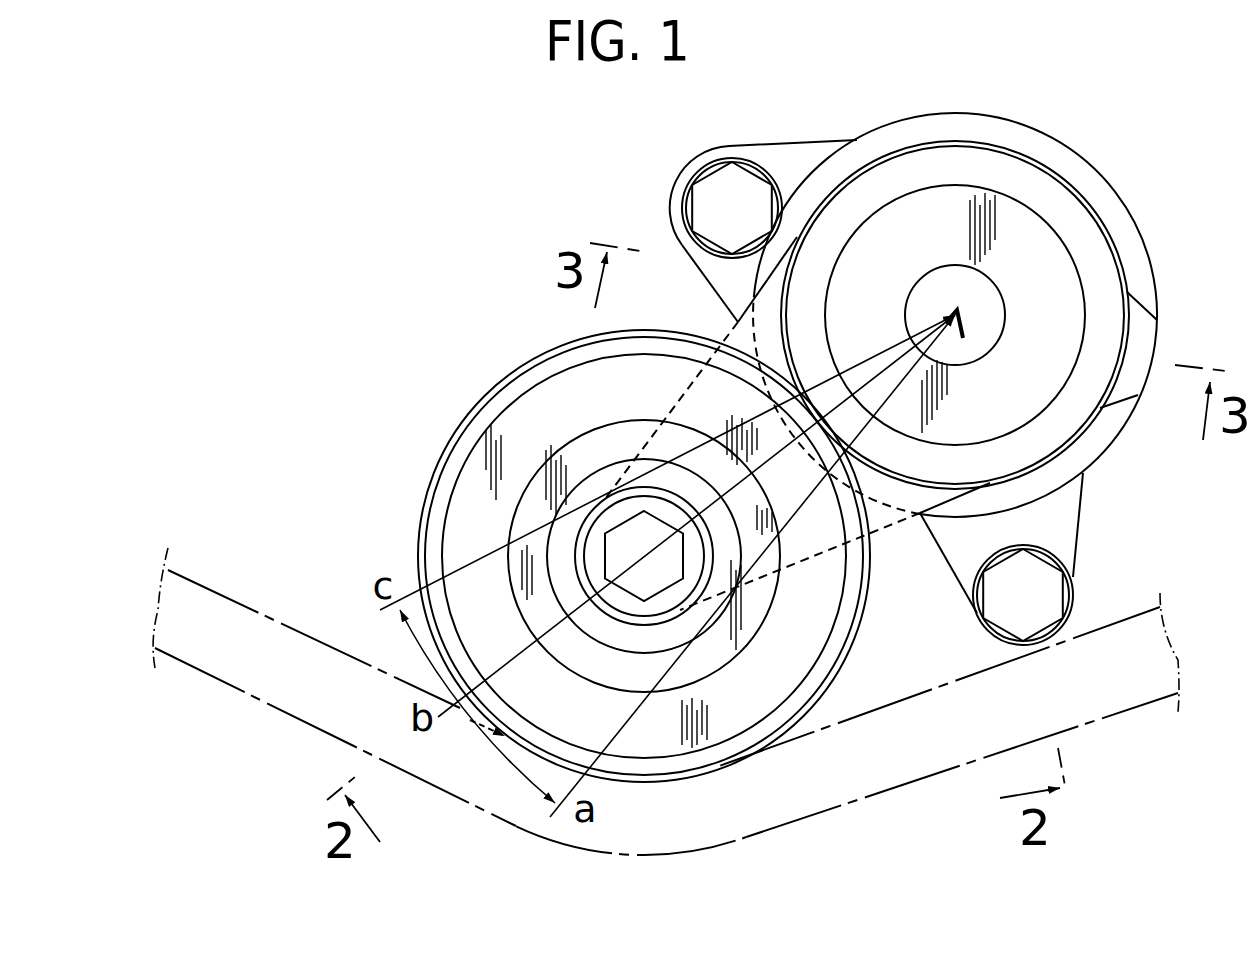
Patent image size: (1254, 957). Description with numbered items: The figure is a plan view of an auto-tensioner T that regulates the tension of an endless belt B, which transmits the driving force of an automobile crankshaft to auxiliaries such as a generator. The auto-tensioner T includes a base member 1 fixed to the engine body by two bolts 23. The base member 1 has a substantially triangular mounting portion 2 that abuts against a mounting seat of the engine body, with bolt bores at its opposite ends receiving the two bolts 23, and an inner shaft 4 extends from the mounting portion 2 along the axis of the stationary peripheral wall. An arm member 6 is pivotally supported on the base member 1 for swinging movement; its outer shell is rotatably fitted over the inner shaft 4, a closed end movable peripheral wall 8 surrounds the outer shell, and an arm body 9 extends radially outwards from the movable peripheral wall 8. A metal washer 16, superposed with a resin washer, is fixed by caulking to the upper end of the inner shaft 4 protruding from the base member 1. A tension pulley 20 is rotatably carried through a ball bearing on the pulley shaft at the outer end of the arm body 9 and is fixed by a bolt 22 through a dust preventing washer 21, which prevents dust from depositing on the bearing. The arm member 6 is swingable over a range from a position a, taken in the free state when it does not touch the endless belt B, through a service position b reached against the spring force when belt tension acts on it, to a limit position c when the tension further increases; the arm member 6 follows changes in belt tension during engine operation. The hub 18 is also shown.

The base member 1 is at (872, 130).
The mounting portion 2 is at (777, 163).
The inner shaft 4 is at (983, 292).
The arm member 6 is at (910, 524).
The movable peripheral wall 8 is at (1123, 199).
The arm body 9 is at (742, 337).
The metal washer 16 is at (1012, 403).
The pulley hub 18 is at (938, 265).
The tension pulley 20 is at (452, 468).
The dust preventing washer 21 is at (600, 447).
The bolt 22 is at (637, 578).
The bolts 23 is at (722, 190).
The endless belt B is at (272, 643).
The auto-tensioner T is at (493, 333).